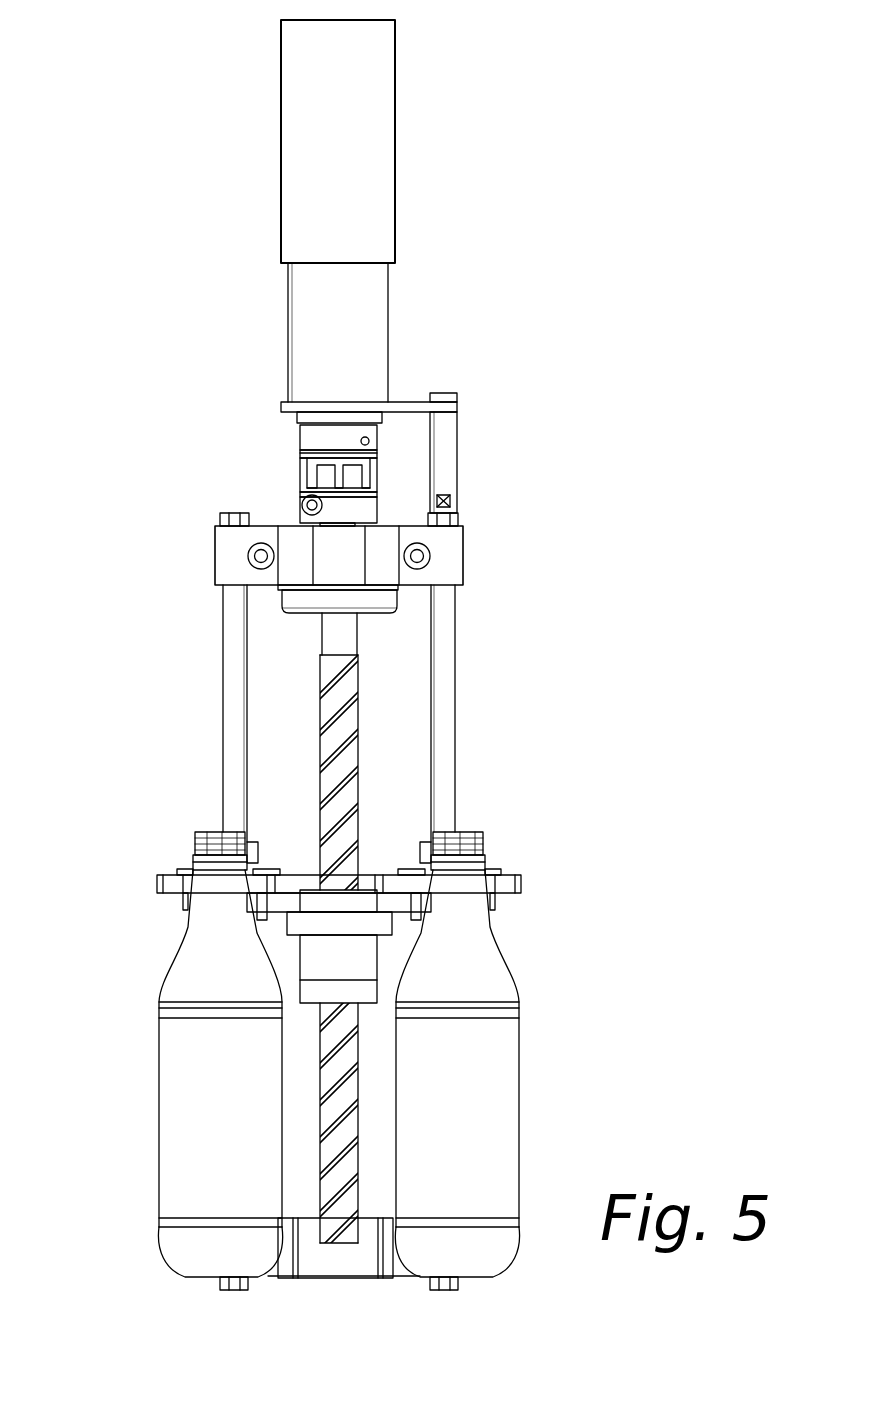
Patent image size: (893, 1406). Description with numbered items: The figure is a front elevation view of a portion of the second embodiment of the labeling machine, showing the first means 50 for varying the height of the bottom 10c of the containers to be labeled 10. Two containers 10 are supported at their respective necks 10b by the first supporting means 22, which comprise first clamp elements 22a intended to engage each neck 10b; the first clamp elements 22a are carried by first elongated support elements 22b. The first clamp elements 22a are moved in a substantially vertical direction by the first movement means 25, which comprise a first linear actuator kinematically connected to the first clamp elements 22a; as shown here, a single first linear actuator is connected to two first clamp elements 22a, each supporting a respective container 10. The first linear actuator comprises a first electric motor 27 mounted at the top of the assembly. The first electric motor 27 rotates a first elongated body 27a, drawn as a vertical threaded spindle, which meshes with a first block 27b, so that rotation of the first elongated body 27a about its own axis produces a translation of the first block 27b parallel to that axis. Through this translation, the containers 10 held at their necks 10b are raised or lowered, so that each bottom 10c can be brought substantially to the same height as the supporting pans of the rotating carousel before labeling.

The first electric motor 27 is at (333, 142).
The first means for varying the height of the bottom 50 is at (416, 386).
The first means for moving the first clamp elements 25 is at (480, 461).
The first supporting means 22 is at (206, 762).
The first clamp element 22a is at (157, 888).
The first elongated support element 22b is at (233, 686).
The first block 27b is at (355, 958).
The first elongated body 27a is at (332, 1185).
The container to be labeled 10 is at (142, 1103).
The neck 10b is at (219, 885).
The bottom 10c is at (212, 1280).